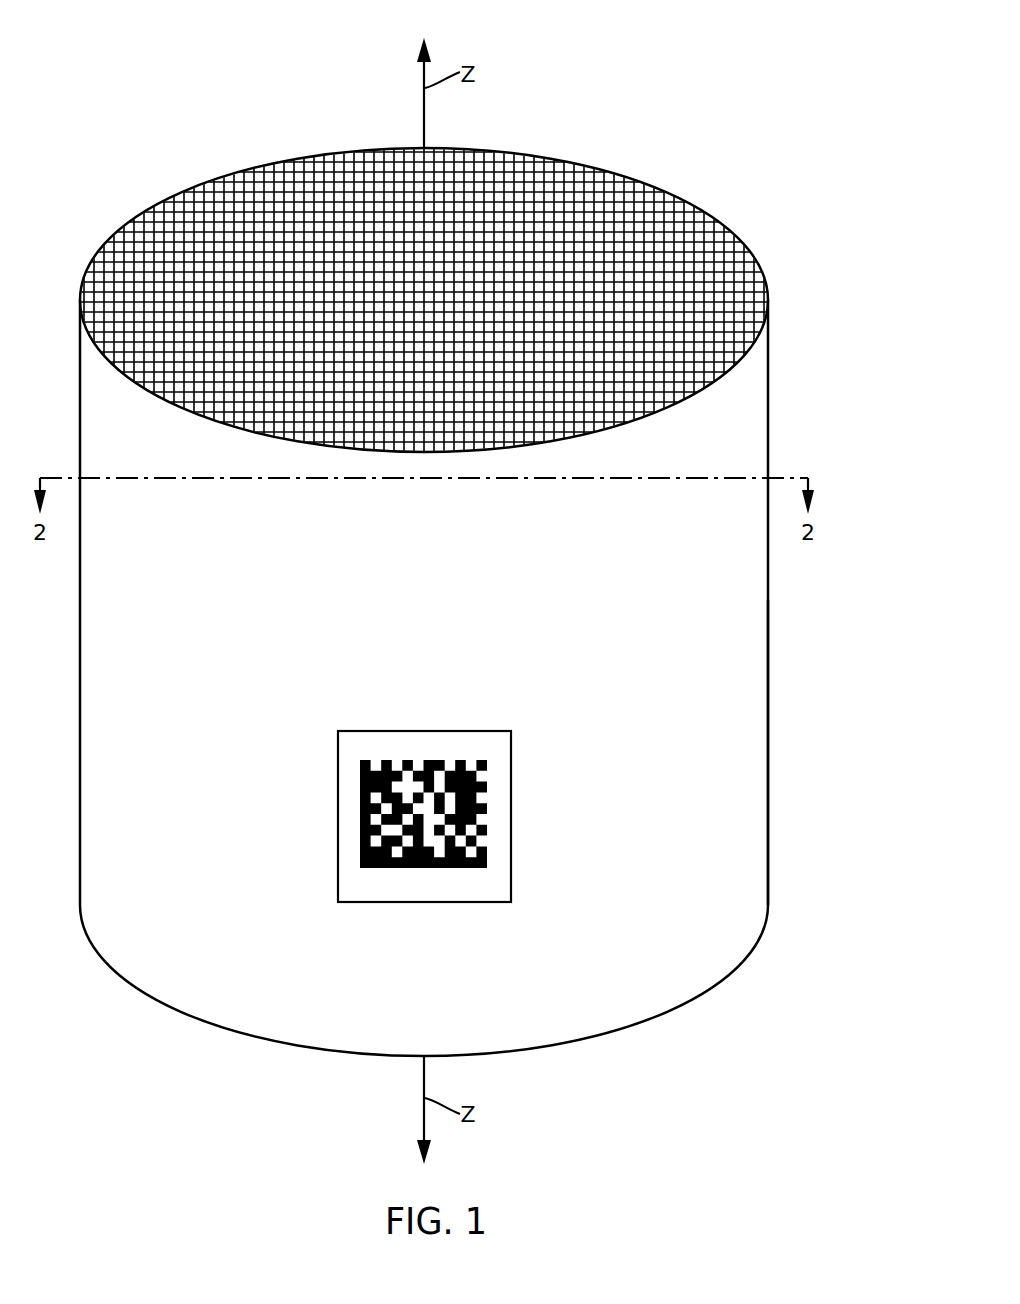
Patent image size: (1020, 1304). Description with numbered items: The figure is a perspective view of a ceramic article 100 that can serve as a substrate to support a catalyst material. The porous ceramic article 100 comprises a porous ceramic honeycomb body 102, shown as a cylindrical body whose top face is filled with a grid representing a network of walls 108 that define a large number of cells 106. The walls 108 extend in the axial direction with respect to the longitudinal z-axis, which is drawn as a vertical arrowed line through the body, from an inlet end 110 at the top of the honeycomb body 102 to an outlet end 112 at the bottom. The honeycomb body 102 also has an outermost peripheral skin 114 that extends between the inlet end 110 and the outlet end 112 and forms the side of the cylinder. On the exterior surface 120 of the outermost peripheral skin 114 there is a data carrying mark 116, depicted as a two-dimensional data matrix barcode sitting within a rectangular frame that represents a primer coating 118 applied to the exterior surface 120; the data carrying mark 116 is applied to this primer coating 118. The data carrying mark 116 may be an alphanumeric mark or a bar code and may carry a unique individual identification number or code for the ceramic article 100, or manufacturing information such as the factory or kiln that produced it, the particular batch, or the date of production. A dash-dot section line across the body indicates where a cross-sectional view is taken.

The ceramic article 100 is at (722, 75).
The porous ceramic honeycomb body 102 is at (768, 608).
The cells 106 is at (512, 162).
The walls 108 is at (566, 172).
The inlet end 110 is at (165, 195).
The outlet end 112 is at (202, 1023).
The outermost peripheral skin 114 is at (715, 381).
The data carrying mark 116 is at (362, 760).
The primer coating 118 is at (512, 765).
The exterior surface 120 is at (757, 782).